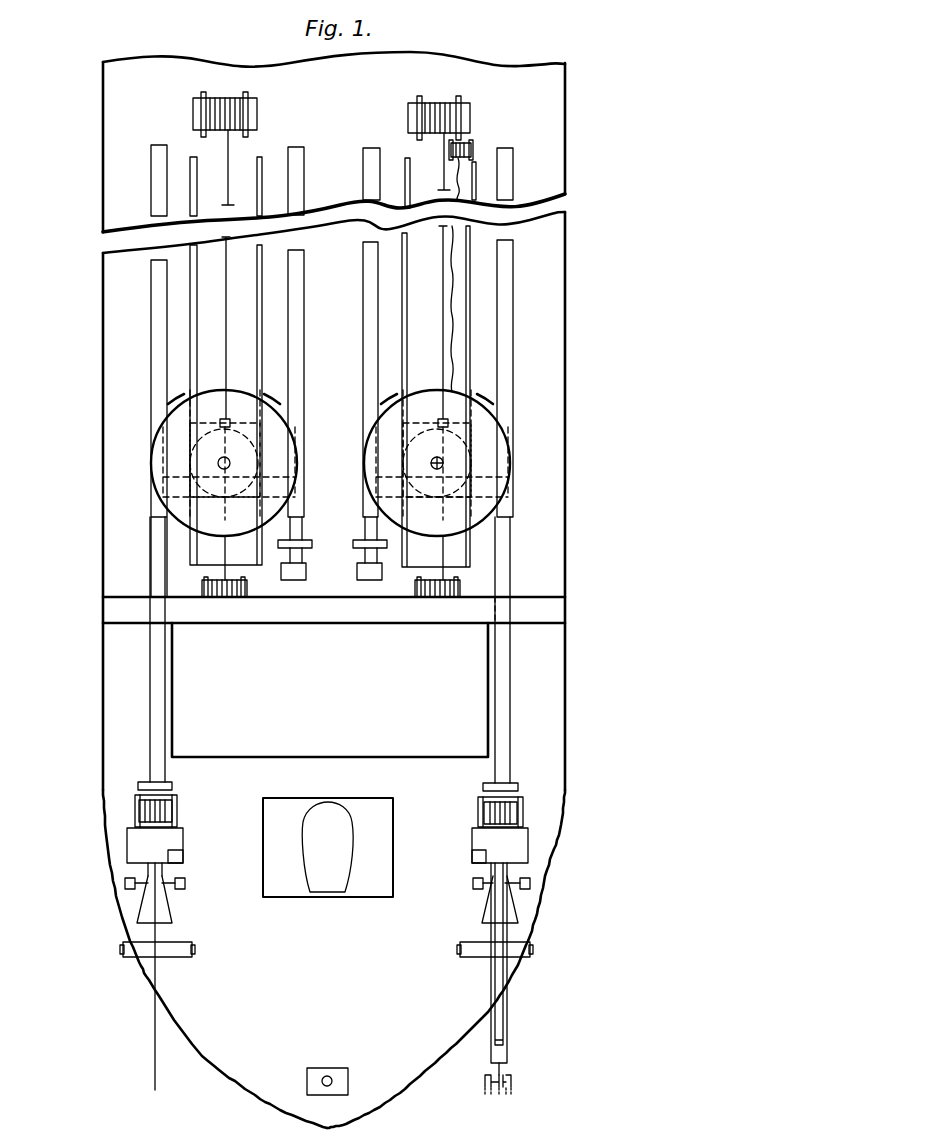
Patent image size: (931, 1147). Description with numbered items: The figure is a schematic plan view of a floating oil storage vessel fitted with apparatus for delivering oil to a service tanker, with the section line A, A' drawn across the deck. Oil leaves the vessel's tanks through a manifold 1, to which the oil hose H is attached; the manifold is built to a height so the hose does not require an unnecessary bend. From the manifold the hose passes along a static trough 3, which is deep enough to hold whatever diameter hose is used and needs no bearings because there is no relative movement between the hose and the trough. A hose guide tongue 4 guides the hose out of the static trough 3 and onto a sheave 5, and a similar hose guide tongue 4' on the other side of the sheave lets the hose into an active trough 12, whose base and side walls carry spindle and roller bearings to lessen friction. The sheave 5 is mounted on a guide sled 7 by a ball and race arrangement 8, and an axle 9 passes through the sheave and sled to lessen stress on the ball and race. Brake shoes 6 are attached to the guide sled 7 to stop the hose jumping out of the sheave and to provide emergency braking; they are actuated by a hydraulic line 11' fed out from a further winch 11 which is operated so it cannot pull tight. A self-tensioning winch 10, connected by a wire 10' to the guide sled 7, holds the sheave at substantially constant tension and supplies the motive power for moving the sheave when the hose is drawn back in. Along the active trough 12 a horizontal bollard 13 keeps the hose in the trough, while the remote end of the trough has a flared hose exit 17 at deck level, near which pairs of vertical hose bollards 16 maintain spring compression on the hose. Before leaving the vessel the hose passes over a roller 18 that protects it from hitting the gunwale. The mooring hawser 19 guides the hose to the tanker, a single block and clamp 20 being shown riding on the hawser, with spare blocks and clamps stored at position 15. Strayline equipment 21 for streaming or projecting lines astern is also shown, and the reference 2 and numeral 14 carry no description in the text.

The manifold 1 is at (360, 575).
The flange 2 is at (355, 547).
The static trough 3 is at (366, 525).
The hose guide tongue 4 is at (414, 463).
The hose guide tongue 4' is at (462, 475).
The sheave 5 is at (366, 462).
The brake shoes 6 is at (390, 400).
The guide sled 7 is at (480, 418).
The ball and race arrangement 8 is at (462, 440).
The axle 9 is at (437, 463).
The self-tensioning winch 10 is at (439, 131).
The wire 10' is at (427, 403).
The further winch 11 is at (531, 158).
The hydraulic line 11' is at (535, 309).
The active trough 12 is at (513, 325).
The horizontal bollard 13 is at (518, 786).
The spring coil 14 is at (528, 845).
The blocks and clamps storage 15 is at (487, 857).
The vertical hose bollards 16 is at (530, 884).
The flared hose exit 17 is at (513, 918).
The roller 18 is at (532, 951).
The mooring hawser 19 is at (503, 1042).
The block and clamp 20 is at (508, 1082).
The strayline equipment 21 is at (341, 1068).
The oil hose H is at (372, 566).
The section line A is at (70, 462).
The section line A' is at (605, 462).